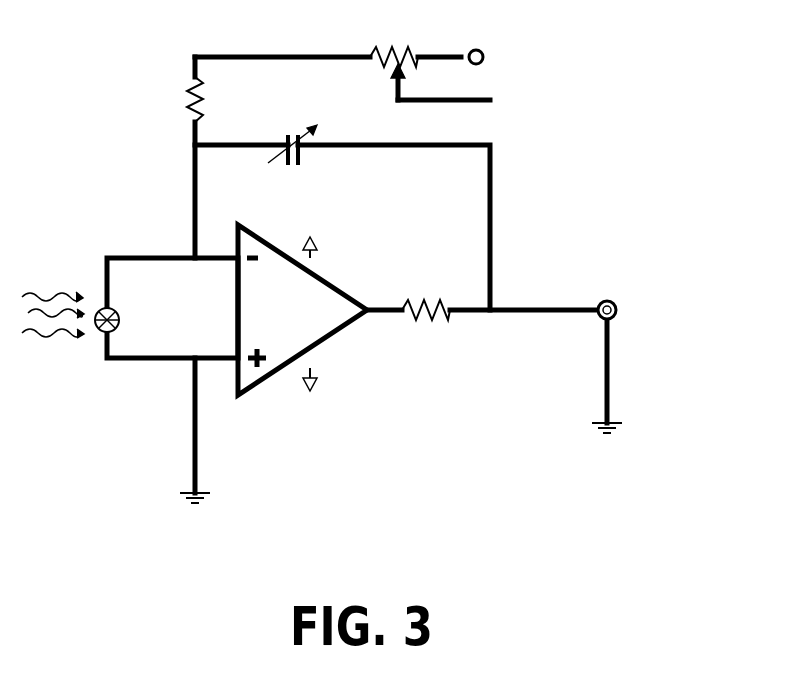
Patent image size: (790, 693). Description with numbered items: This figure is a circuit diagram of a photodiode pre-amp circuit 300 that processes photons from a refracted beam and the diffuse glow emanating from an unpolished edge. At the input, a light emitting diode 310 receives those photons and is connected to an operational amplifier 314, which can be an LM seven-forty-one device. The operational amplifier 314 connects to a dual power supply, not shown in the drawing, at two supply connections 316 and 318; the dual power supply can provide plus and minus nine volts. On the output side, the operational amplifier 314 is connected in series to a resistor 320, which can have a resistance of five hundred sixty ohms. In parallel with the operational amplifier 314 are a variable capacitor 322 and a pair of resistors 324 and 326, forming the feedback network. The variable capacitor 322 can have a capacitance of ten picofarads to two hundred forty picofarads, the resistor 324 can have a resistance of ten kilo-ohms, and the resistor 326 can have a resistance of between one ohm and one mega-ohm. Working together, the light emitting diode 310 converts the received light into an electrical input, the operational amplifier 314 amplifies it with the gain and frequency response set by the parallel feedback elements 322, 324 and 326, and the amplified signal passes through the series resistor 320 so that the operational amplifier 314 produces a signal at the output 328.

The photodiode pre-amp circuit 300 is at (535, 108).
The light emitting diode 310 is at (106, 333).
The operational amplifier 314 is at (353, 320).
The dual power supply connection 316 is at (310, 240).
The dual power supply connection 318 is at (314, 372).
The resistor 320 is at (455, 305).
The variable capacitor 322 is at (297, 163).
The resistor 324 is at (187, 108).
The resistor 326 is at (360, 50).
The signal output 328 is at (625, 303).